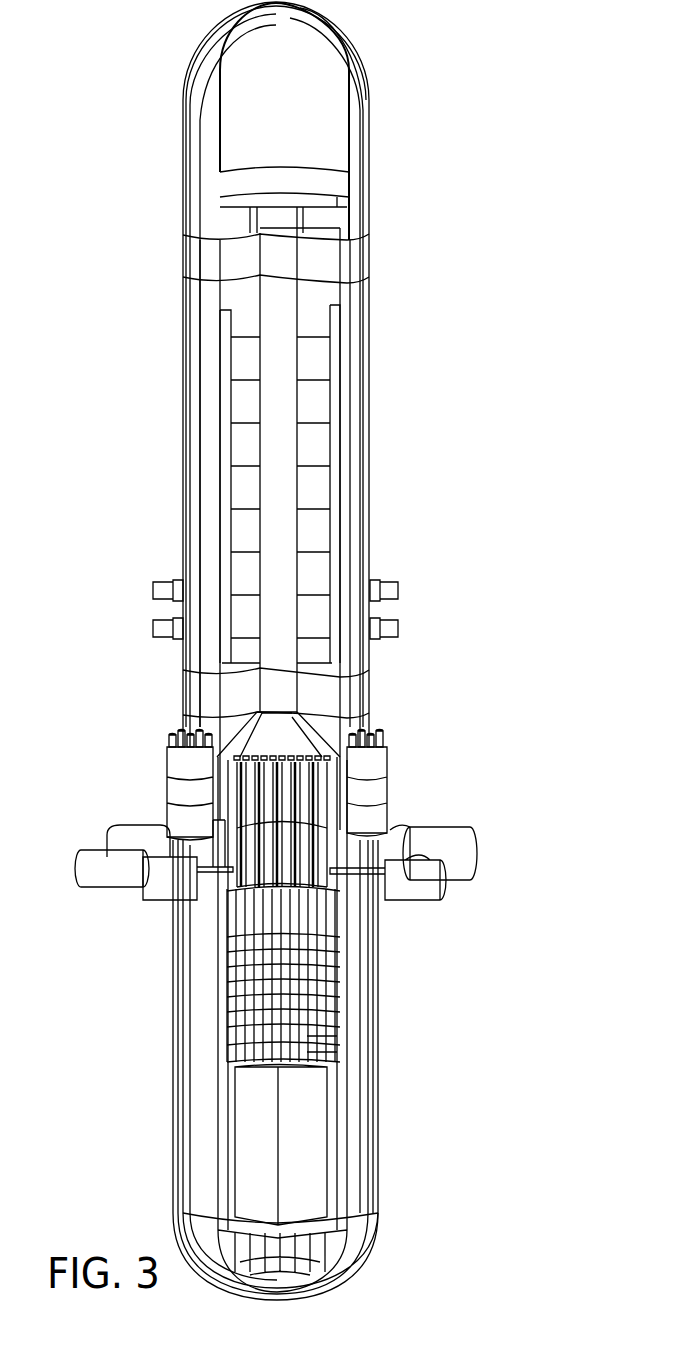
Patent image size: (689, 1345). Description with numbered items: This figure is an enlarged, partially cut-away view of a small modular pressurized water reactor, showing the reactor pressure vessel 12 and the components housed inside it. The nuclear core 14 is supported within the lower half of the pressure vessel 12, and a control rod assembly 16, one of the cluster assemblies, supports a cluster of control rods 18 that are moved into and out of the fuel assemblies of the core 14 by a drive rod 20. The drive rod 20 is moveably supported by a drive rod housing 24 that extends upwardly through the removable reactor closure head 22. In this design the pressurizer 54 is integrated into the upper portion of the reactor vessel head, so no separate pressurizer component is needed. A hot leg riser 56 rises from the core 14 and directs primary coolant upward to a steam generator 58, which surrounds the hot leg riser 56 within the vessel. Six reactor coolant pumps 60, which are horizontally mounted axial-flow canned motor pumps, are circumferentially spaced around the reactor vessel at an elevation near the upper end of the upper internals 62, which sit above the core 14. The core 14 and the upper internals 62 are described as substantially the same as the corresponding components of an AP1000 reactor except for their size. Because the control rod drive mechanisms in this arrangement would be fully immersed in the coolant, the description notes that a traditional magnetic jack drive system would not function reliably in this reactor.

The reactor pressure vessel 12 is at (380, 1115).
The nuclear core 14 is at (313, 1177).
The control rod assembly 16 is at (323, 1033).
The control rods 18 is at (327, 1052).
The drive rod 20 is at (310, 922).
The reactor closure head 22 is at (387, 738).
The drive rod housing 24 is at (320, 877).
The pressurizer 54 is at (367, 242).
The hot leg riser 56 is at (283, 535).
The steam generator 58 is at (308, 462).
The reactor coolant pumps 60 is at (470, 860).
The upper internals 62 is at (263, 980).